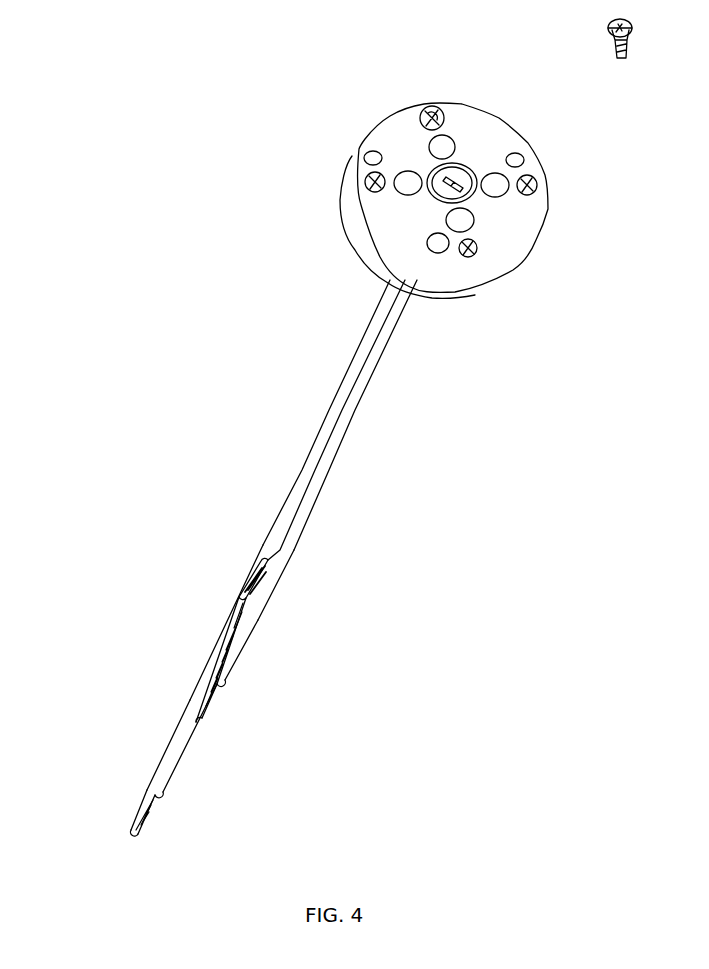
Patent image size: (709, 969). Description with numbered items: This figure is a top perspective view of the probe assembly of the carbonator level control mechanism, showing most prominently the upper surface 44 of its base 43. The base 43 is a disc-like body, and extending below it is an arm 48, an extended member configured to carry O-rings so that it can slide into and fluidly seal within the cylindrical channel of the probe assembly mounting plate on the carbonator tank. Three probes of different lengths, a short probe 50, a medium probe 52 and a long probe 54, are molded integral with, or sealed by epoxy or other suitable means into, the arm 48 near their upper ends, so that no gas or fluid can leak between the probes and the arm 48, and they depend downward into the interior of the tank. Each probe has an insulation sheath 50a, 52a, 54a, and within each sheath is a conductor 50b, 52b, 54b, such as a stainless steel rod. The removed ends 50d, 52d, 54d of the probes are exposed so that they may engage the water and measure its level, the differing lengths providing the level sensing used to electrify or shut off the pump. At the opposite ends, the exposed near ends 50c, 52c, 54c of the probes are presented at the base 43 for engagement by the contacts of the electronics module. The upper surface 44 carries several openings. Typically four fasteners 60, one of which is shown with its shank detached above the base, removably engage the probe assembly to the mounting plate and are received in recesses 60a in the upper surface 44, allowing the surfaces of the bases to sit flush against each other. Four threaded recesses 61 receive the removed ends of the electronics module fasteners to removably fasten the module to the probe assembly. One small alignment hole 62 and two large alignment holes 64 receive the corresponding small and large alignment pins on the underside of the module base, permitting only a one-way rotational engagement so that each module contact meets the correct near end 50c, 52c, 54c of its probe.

The base 43 is at (348, 203).
The upper surface 44 is at (514, 249).
The arm 48 is at (382, 277).
The short probe 50 is at (307, 432).
The insulation sheath 50a is at (333, 398).
The conductor 50b is at (263, 562).
The exposed near end 50c is at (435, 197).
The removed end 50d is at (243, 597).
The medium probe 52 is at (292, 578).
The insulation sheath 52a is at (263, 607).
The conductor 52b is at (225, 687).
The exposed near end 52c is at (463, 188).
The removed end 52d is at (210, 727).
The long probe 54 is at (160, 702).
The insulation sheath 54a is at (210, 658).
The conductor 54b is at (155, 800).
The exposed near end 54c is at (445, 185).
The removed end 54d is at (127, 832).
The fastener 60 is at (446, 146).
The recess 60a is at (502, 197).
The threaded recess 61 is at (440, 102).
The small alignment hole 62 is at (367, 155).
The large alignment hole 64 is at (523, 158).